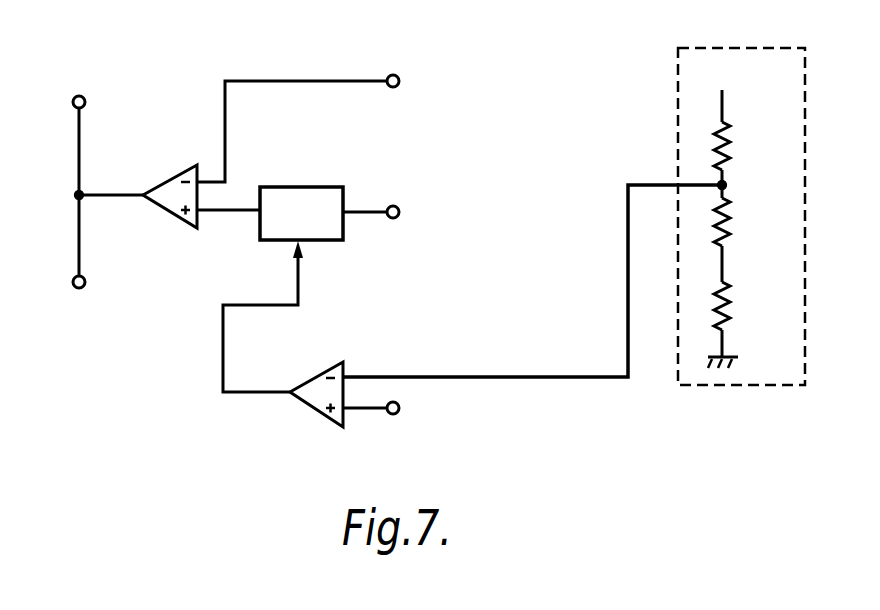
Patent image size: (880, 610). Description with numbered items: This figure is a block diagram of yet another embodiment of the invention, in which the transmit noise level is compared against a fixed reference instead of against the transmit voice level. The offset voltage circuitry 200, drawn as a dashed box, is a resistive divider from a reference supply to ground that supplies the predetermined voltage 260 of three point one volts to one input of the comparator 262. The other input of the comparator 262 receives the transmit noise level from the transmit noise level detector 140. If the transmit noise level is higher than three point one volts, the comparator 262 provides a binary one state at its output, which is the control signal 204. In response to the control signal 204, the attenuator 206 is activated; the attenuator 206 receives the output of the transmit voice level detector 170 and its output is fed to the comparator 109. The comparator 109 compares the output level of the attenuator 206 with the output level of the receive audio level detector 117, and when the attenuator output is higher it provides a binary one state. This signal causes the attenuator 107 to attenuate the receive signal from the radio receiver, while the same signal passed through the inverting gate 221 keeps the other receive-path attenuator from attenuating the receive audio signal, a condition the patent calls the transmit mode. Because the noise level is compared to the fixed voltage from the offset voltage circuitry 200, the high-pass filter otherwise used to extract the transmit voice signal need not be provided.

The attenuator 107 is at (87, 170).
The comparator 109 is at (172, 176).
The receive audio level detector 117 is at (487, 95).
The transmit noise level detector 140 is at (491, 422).
The transmit voice level detector 170 is at (488, 224).
The offset voltage circuitry 200 is at (737, 48).
The control signal 204 is at (288, 394).
The attenuator 206 is at (306, 186).
The inverting gate 221 is at (77, 312).
The predetermined voltage 260 is at (532, 265).
The comparator 262 is at (315, 413).